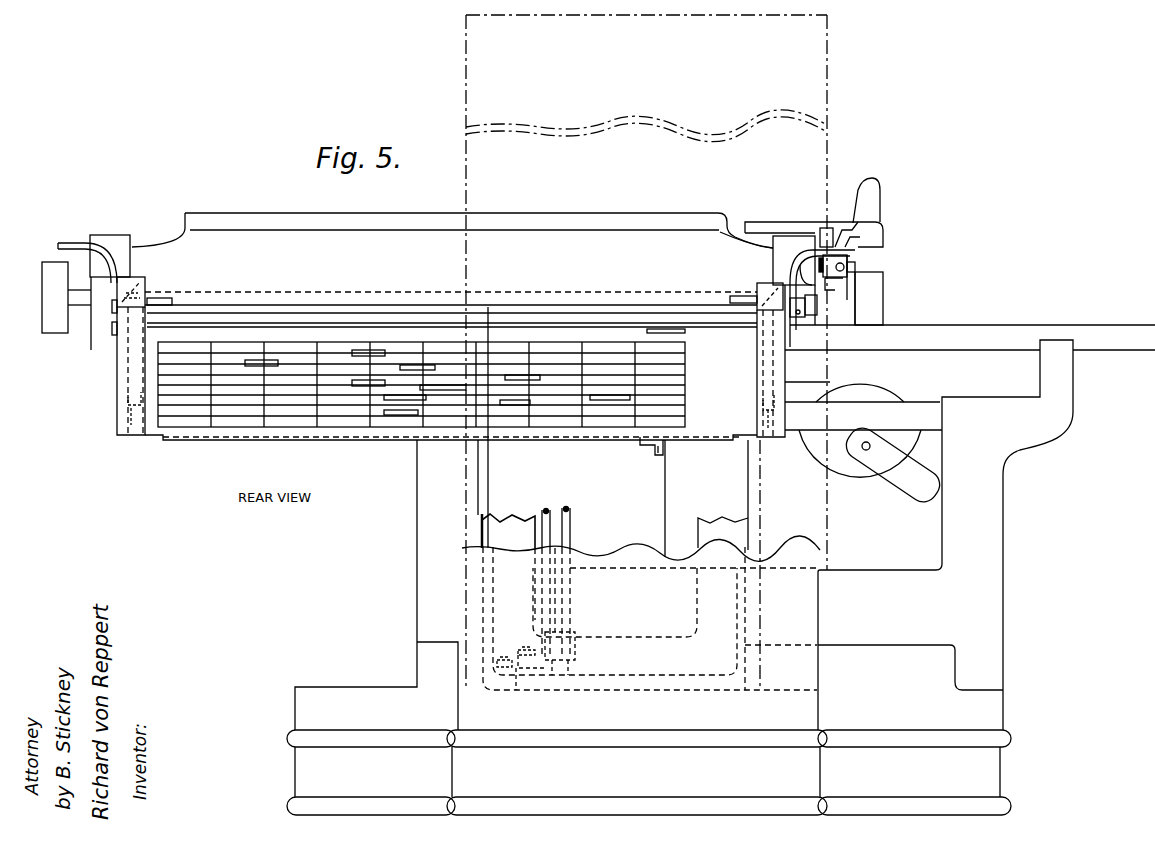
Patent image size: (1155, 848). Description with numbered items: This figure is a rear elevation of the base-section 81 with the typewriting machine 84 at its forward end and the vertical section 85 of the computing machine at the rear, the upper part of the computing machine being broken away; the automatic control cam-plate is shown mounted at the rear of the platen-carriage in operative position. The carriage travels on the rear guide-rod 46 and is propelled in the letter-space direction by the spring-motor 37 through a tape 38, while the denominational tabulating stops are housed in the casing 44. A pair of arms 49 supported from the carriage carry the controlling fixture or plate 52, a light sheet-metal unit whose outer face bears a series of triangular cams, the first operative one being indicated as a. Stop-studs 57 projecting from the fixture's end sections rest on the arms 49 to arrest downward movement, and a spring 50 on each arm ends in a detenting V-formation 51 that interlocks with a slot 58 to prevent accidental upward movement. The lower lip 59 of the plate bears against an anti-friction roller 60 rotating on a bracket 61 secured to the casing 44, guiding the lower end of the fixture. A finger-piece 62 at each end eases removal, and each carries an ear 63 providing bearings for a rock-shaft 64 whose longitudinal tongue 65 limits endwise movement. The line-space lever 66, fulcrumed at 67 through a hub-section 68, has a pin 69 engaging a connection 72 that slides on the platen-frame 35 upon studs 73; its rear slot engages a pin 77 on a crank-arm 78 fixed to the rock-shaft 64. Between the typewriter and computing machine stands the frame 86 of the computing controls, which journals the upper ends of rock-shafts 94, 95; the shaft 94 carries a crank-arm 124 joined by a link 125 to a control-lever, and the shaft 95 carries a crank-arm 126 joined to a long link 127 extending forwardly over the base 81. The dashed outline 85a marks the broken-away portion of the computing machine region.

The platen-frame 35 is at (108, 240).
The spring-motor 37 is at (872, 445).
The tape 38 is at (830, 384).
The casing or frame 44 is at (712, 565).
The rear guide-rod 46 is at (970, 337).
The arms 49 is at (162, 298).
The spring 50 is at (128, 372).
The detenting V-formation 51 is at (128, 406).
The controlling fixture or plate 52 is at (142, 448).
The stop-studs 57 is at (130, 284).
The slot 58 is at (128, 393).
The lower lip 59 is at (278, 440).
The anti-friction roller 60 is at (640, 446).
The bracket 61 is at (655, 452).
The finger-piece 62 is at (70, 243).
The ear 63 is at (117, 300).
The rock-shaft 64 is at (308, 310).
The longitudinal tongue 65 is at (355, 320).
The line-space lever 66 is at (880, 200).
The fulcrum 67 is at (845, 232).
The hub-section 68 is at (824, 230).
The pin 69 is at (856, 266).
The connection 72 is at (847, 277).
The studs 73 is at (819, 264).
The pin 77 is at (830, 288).
The crank-arm 78 is at (791, 271).
The base-section 81 is at (649, 759).
The typewriting machine 84 is at (462, 545).
The vertical section of the computing machine 85 is at (466, 134).
The paper table 85a is at (675, 675).
The frame or casing of the computing controls 86 is at (641, 537).
The rock-shaft 94 is at (570, 528).
The rock-shaft 95 is at (542, 512).
The crank-arm 124 is at (585, 649).
The link 125 is at (520, 650).
The crank-arm 126 is at (516, 672).
The long link 127 is at (496, 663).
The first cam a is at (685, 331).